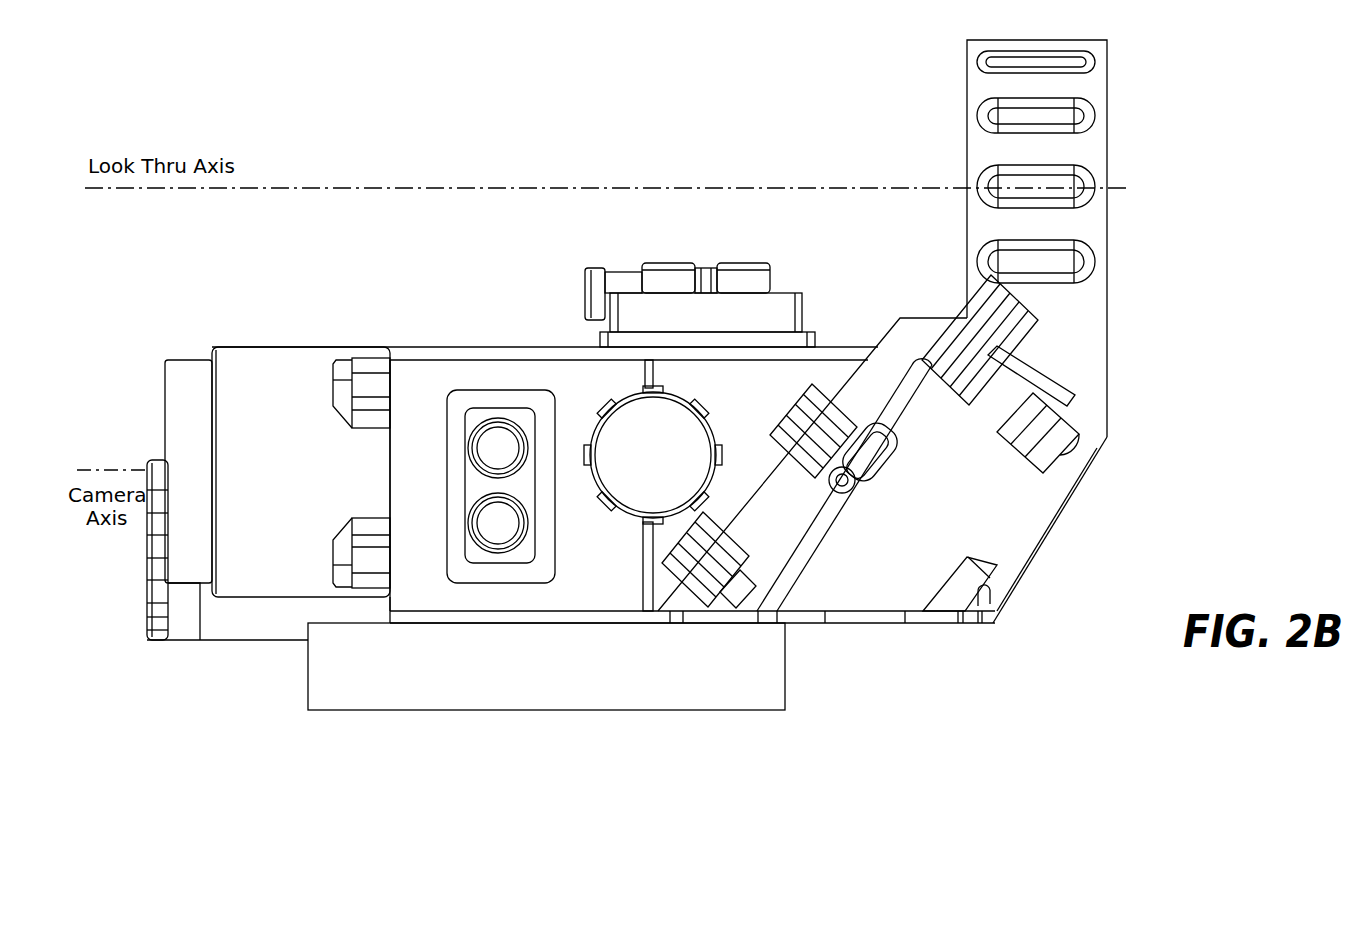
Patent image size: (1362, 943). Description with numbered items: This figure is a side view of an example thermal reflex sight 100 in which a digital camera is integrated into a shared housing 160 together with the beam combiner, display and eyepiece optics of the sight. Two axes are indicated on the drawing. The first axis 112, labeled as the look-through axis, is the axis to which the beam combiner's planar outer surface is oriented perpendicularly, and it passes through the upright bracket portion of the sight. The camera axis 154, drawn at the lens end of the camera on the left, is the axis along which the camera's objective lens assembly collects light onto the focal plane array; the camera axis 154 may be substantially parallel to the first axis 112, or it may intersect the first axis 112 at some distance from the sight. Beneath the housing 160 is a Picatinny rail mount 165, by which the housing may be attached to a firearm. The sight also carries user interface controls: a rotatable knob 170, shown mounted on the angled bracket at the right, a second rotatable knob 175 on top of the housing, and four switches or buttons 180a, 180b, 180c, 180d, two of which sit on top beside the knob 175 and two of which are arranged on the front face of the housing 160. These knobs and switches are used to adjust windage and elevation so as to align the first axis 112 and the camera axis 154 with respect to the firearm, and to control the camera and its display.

The thermal reflex sight 100 is at (340, 256).
The first axis 112 is at (847, 186).
The camera axis 154 is at (95, 468).
The shared housing 160 is at (326, 346).
The Picatinny rail mount 165 is at (308, 668).
The rotatable knob 170 is at (713, 418).
The rotatable knob 175 is at (612, 268).
The switch 180a is at (650, 275).
The switch 180b is at (745, 280).
The switch 180c is at (512, 452).
The switch 180d is at (530, 517).